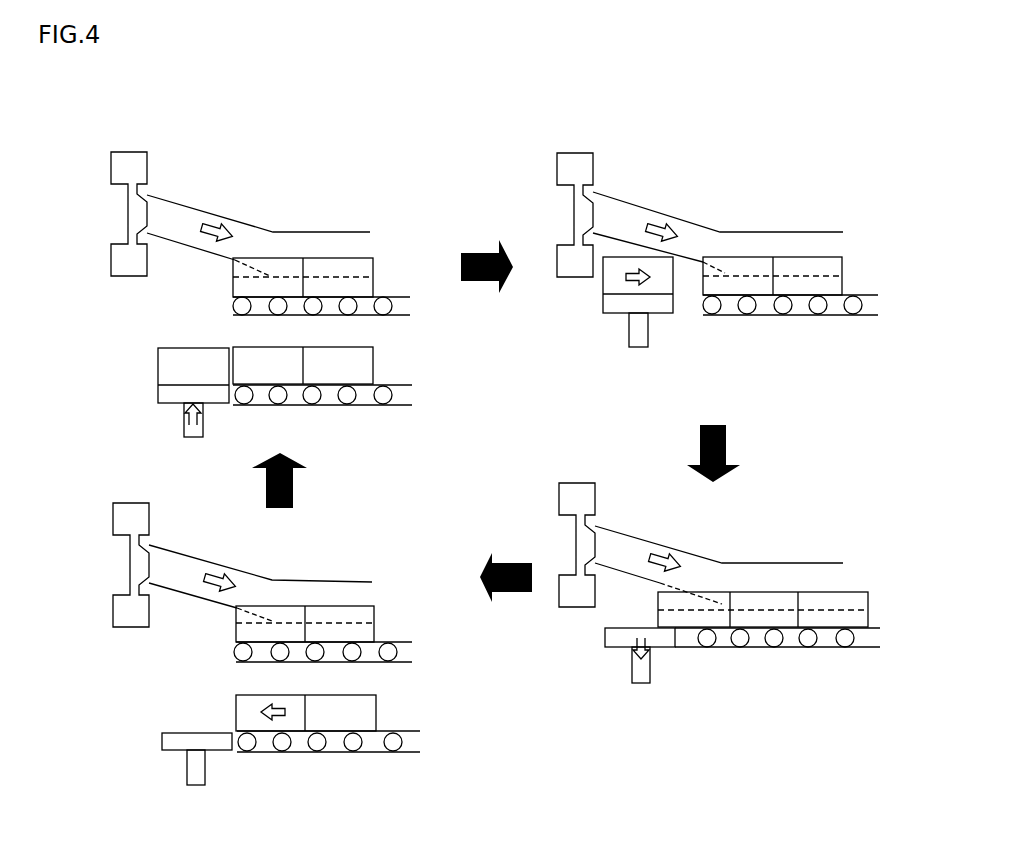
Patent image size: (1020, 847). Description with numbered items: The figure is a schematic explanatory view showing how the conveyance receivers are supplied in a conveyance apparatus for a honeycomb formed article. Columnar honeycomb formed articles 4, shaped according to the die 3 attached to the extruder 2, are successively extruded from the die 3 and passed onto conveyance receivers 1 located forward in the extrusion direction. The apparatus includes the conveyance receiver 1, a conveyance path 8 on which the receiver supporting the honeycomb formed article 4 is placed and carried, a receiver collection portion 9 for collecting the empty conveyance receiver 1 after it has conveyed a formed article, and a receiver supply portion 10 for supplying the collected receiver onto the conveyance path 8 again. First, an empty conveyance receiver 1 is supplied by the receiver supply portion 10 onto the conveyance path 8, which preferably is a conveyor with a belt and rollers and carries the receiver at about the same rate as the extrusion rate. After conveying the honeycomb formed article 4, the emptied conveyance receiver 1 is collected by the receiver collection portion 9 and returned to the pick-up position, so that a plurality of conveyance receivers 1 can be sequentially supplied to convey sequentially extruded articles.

The conveyance receiver 1 is at (288, 256).
The extruder 2 is at (130, 150).
The die 3 is at (126, 219).
The honeycomb formed article 4 is at (186, 222).
The conveyance path 8 is at (403, 318).
The receiver collection portion 9 is at (381, 410).
The receiver supply portion 10 is at (208, 420).